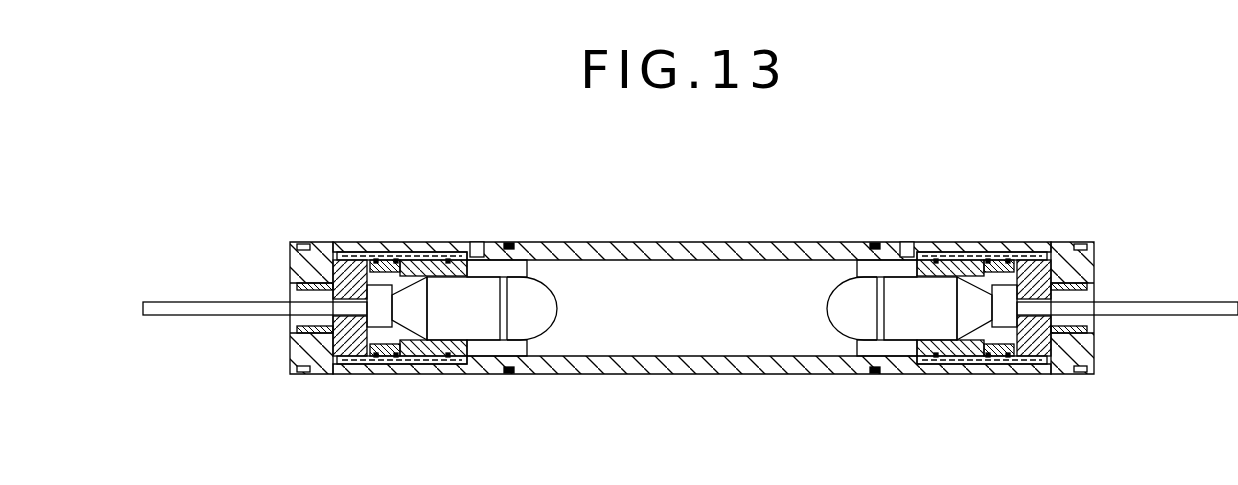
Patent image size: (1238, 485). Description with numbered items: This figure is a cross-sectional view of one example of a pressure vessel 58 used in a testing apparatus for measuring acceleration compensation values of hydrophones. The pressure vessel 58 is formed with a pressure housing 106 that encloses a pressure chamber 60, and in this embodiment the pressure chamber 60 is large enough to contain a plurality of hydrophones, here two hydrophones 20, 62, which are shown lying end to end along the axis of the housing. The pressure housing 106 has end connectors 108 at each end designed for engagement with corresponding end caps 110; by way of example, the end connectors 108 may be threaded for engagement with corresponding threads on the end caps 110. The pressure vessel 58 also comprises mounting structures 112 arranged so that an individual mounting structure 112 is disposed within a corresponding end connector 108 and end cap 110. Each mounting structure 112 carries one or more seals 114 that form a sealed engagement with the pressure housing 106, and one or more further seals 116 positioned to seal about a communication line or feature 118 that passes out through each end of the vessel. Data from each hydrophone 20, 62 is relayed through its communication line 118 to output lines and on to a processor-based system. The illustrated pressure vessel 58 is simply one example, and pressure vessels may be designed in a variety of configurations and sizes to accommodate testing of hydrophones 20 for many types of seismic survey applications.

The pressure vessel 58 is at (1039, 177).
The hydrophone 20 is at (542, 328).
The pressure chamber 60 is at (687, 340).
The hydrophone 62 is at (842, 328).
The pressure housing 106 is at (762, 374).
The end connector 108 is at (438, 362).
The end cap 110 is at (288, 266).
The mounting structure 112 is at (407, 370).
The seal 114 is at (450, 254).
The seal 116 is at (355, 262).
The communication line or feature 118 is at (199, 317).